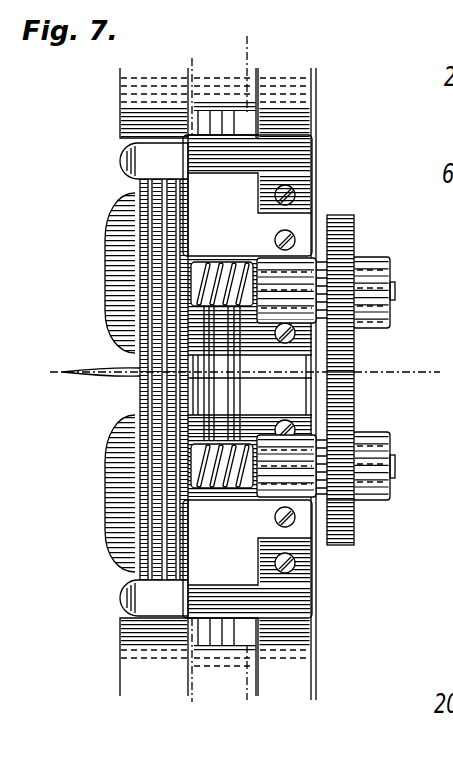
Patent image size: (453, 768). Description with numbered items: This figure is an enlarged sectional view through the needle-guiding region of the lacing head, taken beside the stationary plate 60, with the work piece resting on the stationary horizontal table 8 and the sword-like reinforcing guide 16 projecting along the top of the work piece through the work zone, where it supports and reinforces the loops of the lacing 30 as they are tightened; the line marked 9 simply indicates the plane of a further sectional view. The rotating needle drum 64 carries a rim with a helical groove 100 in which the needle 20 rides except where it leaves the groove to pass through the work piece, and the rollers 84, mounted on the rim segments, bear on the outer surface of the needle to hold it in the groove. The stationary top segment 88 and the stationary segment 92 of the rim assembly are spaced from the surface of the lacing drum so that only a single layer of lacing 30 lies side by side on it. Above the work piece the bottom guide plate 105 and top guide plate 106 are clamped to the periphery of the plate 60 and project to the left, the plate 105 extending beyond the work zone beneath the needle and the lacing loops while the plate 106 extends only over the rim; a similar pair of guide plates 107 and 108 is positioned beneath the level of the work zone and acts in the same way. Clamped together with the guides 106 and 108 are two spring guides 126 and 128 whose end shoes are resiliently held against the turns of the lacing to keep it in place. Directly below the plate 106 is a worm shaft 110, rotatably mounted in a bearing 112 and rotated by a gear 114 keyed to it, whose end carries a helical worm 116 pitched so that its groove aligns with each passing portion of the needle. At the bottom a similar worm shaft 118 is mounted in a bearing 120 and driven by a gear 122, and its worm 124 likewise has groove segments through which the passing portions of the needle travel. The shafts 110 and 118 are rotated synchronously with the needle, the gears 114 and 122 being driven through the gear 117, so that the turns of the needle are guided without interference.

The stationary horizontal table 8 is at (192, 718).
The section line 9- 9 is at (437, 372).
The reinforcing guide 16 is at (105, 368).
The needle 20 is at (212, 406).
The lacing 30 is at (186, 390).
The stationary plate 60 is at (314, 645).
The rotating needle drum 64 is at (254, 382).
The rollers 84 is at (247, 662).
The stationary top segment 88 is at (126, 112).
The stationary segment 92 is at (125, 664).
The helical groove 100 is at (234, 118).
The bottom guide plate 105 is at (118, 286).
The top guide plate 106 is at (243, 193).
The guide plate 107 is at (120, 484).
The guide plate 108 is at (240, 568).
The worm shaft 110 is at (396, 290).
The bearing 112 is at (268, 272).
The gear 114 is at (346, 290).
The helical worm 116 is at (226, 265).
The gear 117 is at (348, 385).
The worm shaft 118 is at (397, 474).
The bearing 120 is at (270, 482).
The gear 122 is at (340, 488).
The worm 124 is at (211, 452).
The spring guide 126 is at (165, 160).
The spring guide 128 is at (160, 594).